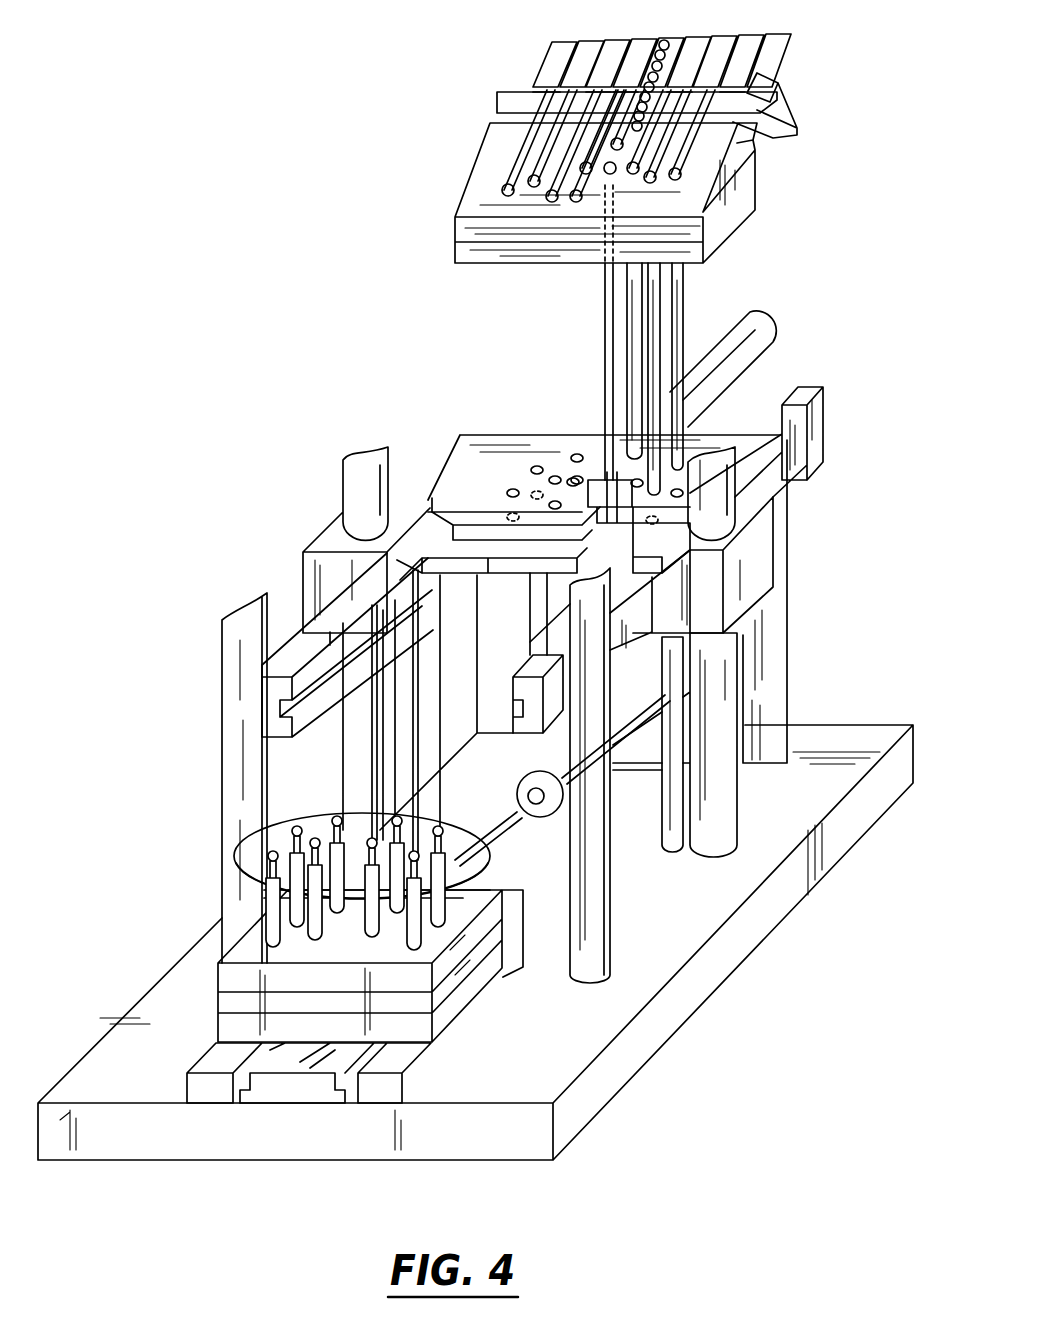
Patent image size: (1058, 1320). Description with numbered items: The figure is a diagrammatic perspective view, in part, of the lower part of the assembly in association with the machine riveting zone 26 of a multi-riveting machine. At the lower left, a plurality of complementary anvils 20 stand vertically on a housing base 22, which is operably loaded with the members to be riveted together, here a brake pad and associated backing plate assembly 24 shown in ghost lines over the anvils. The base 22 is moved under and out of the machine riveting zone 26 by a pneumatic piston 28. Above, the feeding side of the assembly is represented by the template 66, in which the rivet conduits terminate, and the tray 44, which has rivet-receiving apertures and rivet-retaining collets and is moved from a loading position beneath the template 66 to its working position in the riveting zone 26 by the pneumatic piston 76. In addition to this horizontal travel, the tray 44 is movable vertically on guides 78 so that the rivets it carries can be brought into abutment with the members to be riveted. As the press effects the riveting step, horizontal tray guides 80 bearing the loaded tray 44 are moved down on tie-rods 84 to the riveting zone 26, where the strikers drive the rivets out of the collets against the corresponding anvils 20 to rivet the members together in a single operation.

The anvils 20 is at (258, 915).
The housing base 22 is at (228, 982).
The brake pad and associated backing plate assembly 24 is at (250, 855).
The machine riveting zone 26 is at (500, 855).
The pneumatic piston 28 is at (643, 685).
The tray 44 is at (470, 548).
The template 66 is at (485, 445).
The pneumatic piston 76 is at (767, 323).
The guides 78 is at (725, 662).
The horizontal tray guides 80 is at (818, 443).
The tie-rods 84 is at (670, 760).